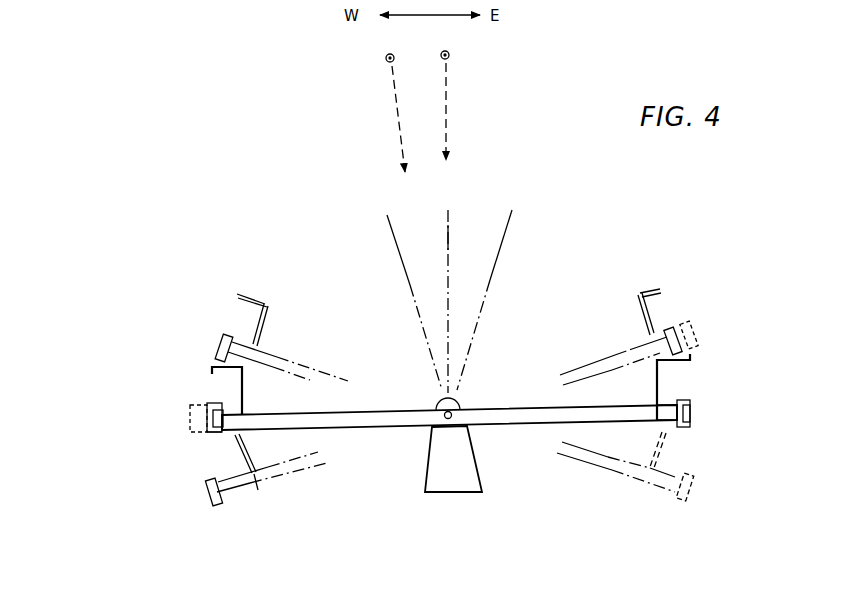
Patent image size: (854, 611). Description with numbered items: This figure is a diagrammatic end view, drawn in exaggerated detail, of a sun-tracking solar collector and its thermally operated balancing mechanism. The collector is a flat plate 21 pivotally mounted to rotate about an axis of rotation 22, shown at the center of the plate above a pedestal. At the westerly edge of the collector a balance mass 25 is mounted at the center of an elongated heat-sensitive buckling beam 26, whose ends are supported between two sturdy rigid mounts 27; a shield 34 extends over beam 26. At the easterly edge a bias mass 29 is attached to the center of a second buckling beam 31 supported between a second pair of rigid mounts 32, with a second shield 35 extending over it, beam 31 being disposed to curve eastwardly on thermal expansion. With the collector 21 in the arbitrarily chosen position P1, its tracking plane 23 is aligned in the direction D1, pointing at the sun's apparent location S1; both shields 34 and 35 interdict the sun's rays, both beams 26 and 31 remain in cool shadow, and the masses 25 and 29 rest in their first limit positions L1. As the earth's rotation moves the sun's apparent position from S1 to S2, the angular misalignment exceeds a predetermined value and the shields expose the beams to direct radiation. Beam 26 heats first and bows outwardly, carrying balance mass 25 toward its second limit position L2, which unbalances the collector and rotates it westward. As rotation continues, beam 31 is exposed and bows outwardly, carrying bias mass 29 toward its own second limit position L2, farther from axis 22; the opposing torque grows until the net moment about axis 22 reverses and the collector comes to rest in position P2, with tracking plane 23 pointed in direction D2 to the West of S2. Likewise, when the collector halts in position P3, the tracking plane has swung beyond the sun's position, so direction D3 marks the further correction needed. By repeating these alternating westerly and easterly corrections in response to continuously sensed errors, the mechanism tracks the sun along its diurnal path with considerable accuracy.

The flat plate collector 21 is at (503, 383).
The axis of rotation 22 is at (446, 412).
The tracking plane 23 is at (447, 236).
The balance mass 25 is at (216, 406).
The buckling beam 26 is at (205, 433).
The mounts 27 is at (228, 414).
The bias mass 29 is at (691, 400).
The second buckling beam 31 is at (690, 415).
The second pair of rigid mounts 32 is at (668, 407).
The shield 34 is at (212, 365).
The shield 35 is at (690, 357).
The sun's apparent location S1 is at (449, 56).
The sun's apparent position S2 is at (385, 59).
The direction D1 is at (451, 289).
The direction D2 is at (406, 290).
The direction D3 is at (493, 290).
The position P1 is at (516, 421).
The position P2 is at (576, 373).
The position P3 is at (600, 462).
The first limit position L1 is at (211, 437).
The second limit position L2 is at (200, 420).